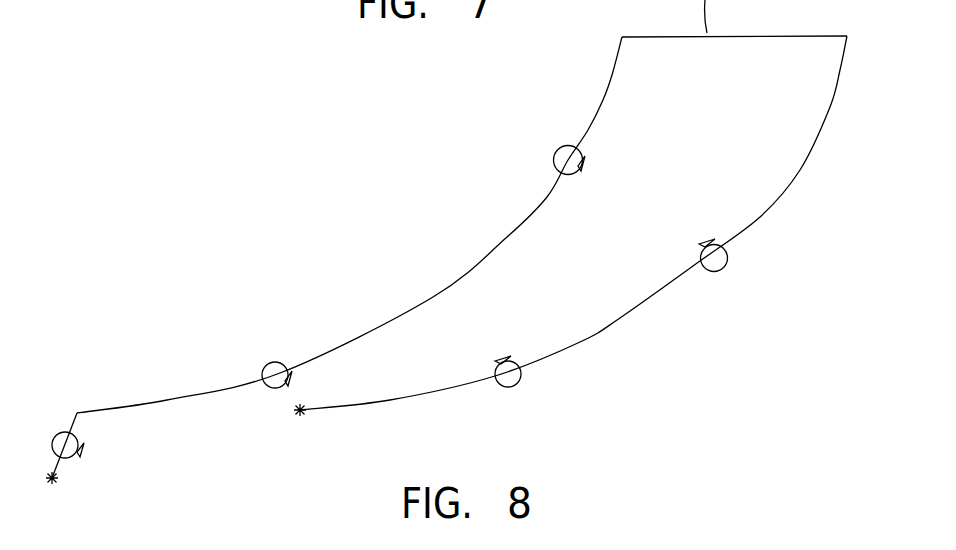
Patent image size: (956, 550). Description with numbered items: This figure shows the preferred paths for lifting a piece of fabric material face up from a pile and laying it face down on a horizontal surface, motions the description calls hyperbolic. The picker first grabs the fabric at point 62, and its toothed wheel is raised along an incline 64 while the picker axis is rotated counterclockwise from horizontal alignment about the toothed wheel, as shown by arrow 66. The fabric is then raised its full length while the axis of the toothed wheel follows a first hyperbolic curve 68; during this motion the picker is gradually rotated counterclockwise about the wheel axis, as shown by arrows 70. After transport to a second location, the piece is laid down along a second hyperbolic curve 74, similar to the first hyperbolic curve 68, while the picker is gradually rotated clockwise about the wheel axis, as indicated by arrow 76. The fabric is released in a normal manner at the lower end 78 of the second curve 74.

The point 62 is at (56, 481).
The incline 64 is at (78, 421).
The arrow 66 is at (56, 436).
The first hyperbolic curve 68 is at (433, 297).
The arrows 70 is at (270, 364).
The second hyperbolic curve 74 is at (622, 320).
The arrow 76 is at (495, 373).
The lower end 78 is at (300, 412).